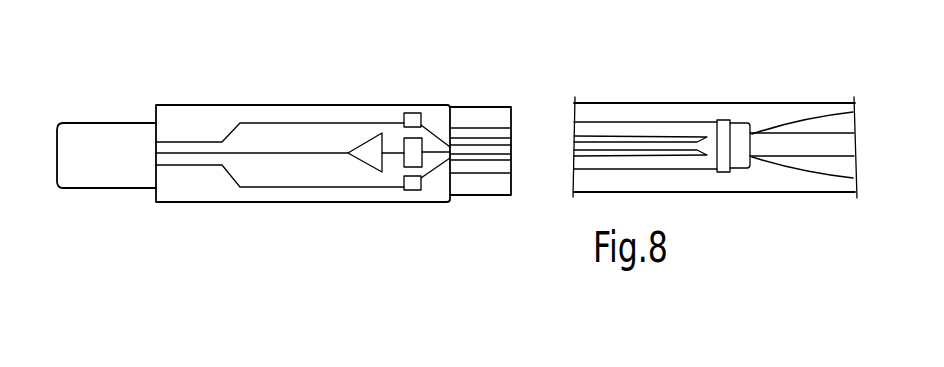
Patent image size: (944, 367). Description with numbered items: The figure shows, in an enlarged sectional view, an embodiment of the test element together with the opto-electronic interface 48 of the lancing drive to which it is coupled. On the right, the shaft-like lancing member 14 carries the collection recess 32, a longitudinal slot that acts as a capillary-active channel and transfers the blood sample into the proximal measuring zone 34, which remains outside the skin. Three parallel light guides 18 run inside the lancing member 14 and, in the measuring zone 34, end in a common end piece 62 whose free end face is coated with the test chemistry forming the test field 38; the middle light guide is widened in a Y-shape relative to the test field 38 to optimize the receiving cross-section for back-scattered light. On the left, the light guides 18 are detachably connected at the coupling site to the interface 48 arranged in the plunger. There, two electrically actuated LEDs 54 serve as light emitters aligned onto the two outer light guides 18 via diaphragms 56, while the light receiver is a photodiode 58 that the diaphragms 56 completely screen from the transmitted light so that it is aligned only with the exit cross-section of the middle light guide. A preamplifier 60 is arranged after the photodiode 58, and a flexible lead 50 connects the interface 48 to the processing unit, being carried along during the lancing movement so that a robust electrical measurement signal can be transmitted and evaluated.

The lancing member 14 is at (796, 193).
The light guides 18 is at (503, 165).
The collection recess 32 is at (803, 143).
The measuring zone 34 is at (747, 140).
The test field 38 is at (738, 126).
The interface 48 is at (264, 203).
The flexible lead 50 is at (120, 189).
The LEDs 54 is at (412, 120).
The diaphragms 56 is at (430, 133).
The photodiode 58 is at (408, 152).
The preamplifier 60 is at (374, 158).
The common end piece 62 is at (722, 150).